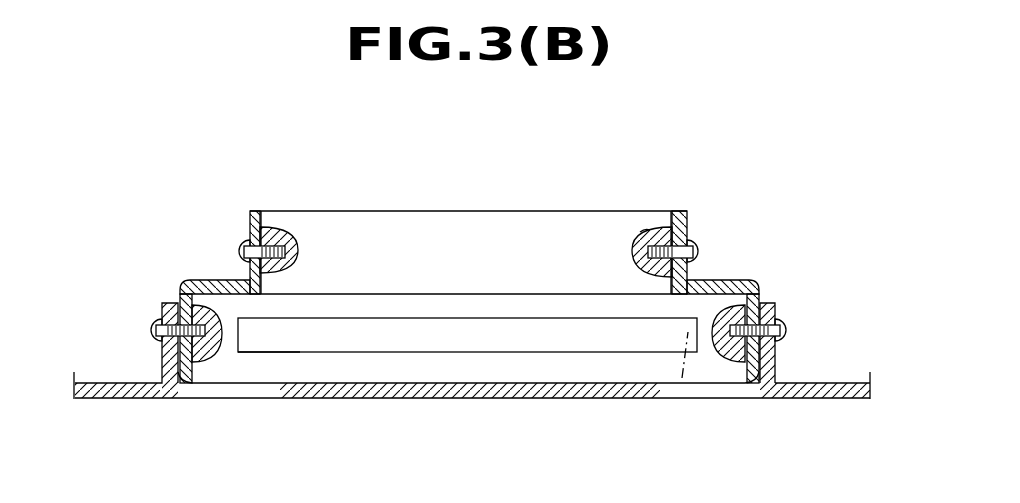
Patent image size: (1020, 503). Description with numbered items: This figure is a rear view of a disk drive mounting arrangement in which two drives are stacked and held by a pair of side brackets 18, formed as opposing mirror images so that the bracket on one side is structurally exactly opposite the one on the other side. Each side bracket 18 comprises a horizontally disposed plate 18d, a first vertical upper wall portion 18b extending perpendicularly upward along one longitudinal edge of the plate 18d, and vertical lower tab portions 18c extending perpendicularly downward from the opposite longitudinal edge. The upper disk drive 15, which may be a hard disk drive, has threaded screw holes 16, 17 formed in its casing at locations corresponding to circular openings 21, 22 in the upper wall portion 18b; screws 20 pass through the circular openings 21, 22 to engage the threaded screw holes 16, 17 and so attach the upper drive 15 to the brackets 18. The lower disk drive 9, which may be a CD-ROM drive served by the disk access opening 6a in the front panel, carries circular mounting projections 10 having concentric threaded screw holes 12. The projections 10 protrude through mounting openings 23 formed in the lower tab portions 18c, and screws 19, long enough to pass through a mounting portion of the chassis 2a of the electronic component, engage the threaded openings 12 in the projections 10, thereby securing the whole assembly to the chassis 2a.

The chassis 2a is at (833, 400).
The disk access opening 6a is at (682, 380).
The disk drive 9 is at (290, 358).
The circular mounting projection 10 is at (168, 338).
The threaded screw hole 12 is at (215, 330).
The upper disk drive 15 is at (510, 208).
The threaded screw hole 16 is at (262, 250).
The threaded screw hole 17 is at (646, 230).
The side bracket 18 is at (205, 252).
The upper wall portion 18b is at (256, 211).
The lower tab portion 18c is at (185, 383).
The horizontally disposed plate 18d is at (184, 281).
The screw 19 is at (152, 330).
The screw 20 is at (244, 248).
The circular opening 21 is at (262, 228).
The circular opening 22 is at (697, 243).
The mounting opening 23 is at (197, 308).